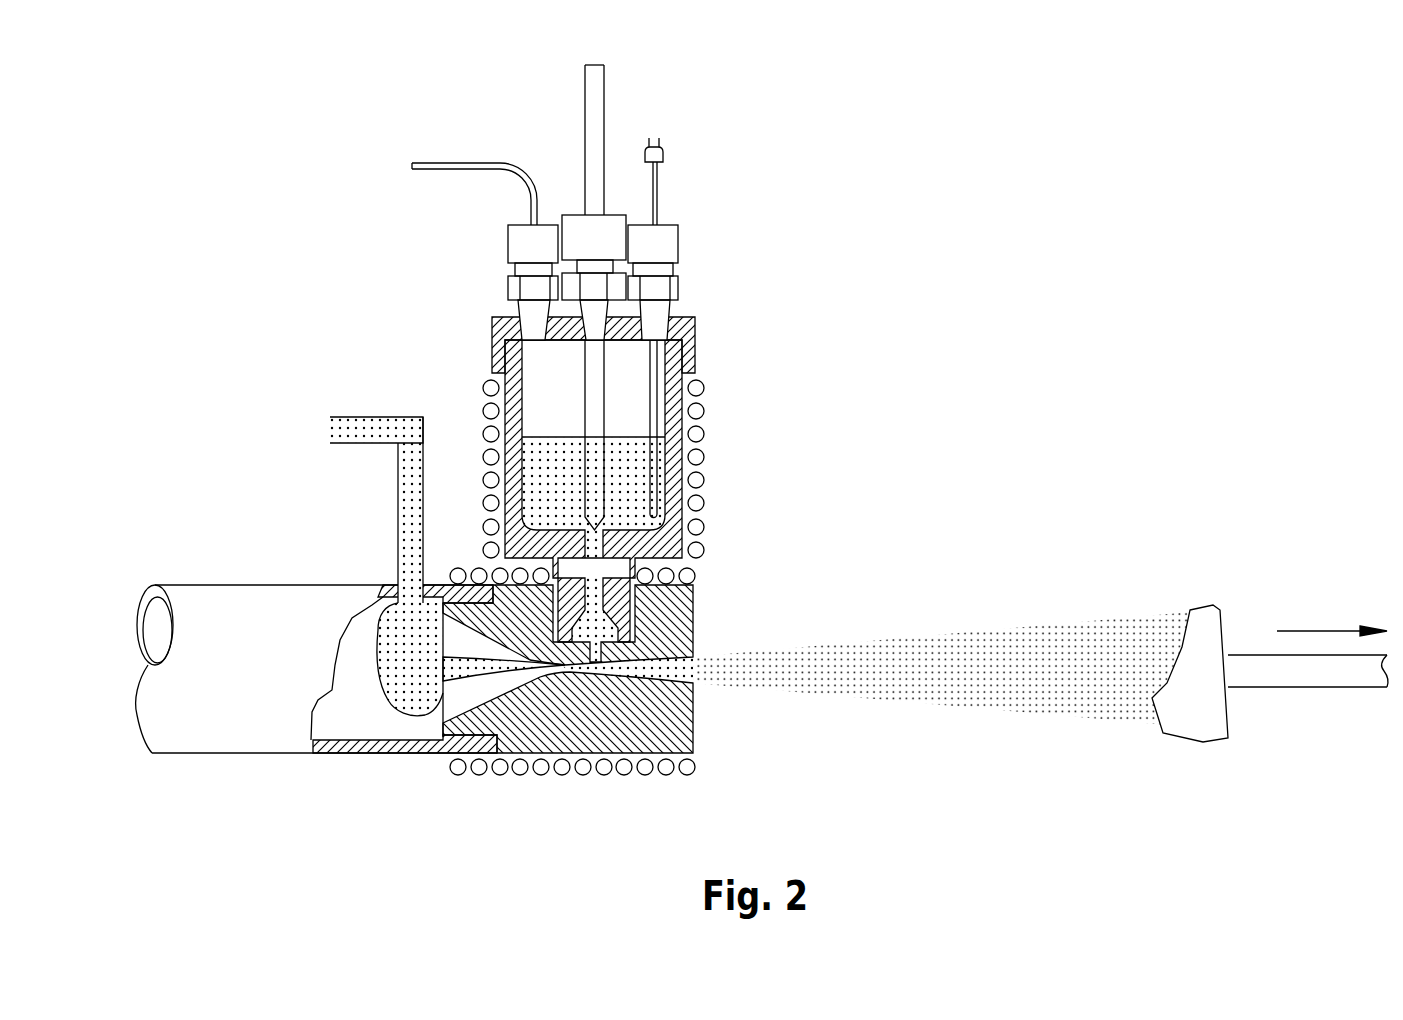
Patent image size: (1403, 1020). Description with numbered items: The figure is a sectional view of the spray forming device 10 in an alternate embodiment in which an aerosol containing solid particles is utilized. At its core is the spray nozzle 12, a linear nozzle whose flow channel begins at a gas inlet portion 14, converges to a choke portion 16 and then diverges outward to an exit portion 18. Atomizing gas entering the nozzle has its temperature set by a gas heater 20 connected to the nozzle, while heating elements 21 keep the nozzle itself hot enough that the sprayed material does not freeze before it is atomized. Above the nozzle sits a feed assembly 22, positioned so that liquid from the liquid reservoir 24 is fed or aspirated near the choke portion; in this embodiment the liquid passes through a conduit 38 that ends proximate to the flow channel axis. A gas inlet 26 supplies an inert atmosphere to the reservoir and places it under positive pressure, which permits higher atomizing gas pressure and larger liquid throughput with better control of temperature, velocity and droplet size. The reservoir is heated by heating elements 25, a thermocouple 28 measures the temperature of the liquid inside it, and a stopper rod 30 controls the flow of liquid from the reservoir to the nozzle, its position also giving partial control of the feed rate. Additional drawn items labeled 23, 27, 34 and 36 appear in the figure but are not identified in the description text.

The spray forming device 10 is at (216, 284).
The spray nozzle 12 is at (693, 720).
The gas inlet portion 14 is at (443, 693).
The choke portion 16 is at (574, 670).
The exit portion 18 is at (677, 668).
The gas heater 20 is at (208, 585).
The heating elements 21 is at (645, 776).
The feed assembly 22 is at (737, 300).
The feed conduit 23 is at (389, 428).
The liquid reservoir 24 is at (683, 427).
The heating elements 25 is at (487, 502).
The gas inlet 26 is at (412, 163).
The feed tube 27 is at (398, 503).
The thermocouple 28 is at (655, 492).
The stopper rod 30 is at (606, 88).
The substrate 34 is at (1198, 742).
The substrate support rod 36 is at (1195, 610).
The conduit 38 is at (593, 667).